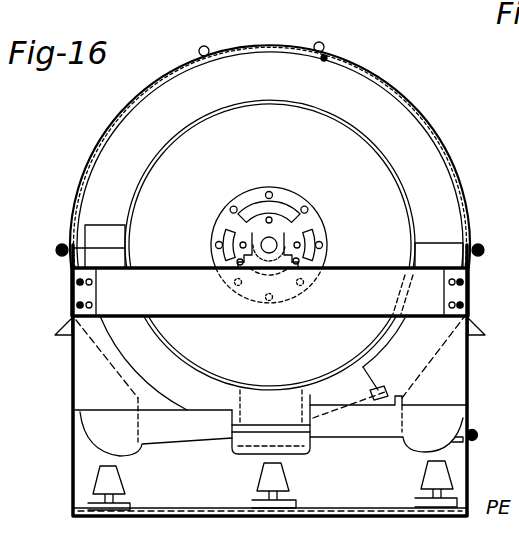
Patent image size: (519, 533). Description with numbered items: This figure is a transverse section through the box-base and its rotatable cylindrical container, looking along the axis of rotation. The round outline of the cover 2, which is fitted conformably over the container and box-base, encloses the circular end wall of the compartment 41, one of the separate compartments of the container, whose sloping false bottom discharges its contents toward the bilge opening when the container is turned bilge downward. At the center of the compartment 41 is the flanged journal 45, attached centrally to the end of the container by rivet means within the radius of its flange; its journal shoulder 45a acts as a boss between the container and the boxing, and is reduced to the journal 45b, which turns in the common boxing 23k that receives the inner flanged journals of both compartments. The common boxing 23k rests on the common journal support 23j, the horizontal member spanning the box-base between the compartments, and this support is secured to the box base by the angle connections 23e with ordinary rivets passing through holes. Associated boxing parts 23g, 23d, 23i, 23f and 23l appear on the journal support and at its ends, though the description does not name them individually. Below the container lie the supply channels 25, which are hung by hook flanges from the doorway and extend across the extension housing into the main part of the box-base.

The cover 2 is at (410, 108).
The compartment 41 is at (382, 152).
The flanged journal 45 is at (288, 193).
The journal shoulder 45a is at (266, 236).
The journal 45b is at (274, 243).
The slot 23g is at (305, 242).
The common boxing 23k is at (218, 249).
The bracket 23d is at (300, 258).
The common journal support 23j is at (270, 292).
The angle connection 23e is at (93, 286).
The bolt 23i is at (93, 304).
The rivets 23f is at (77, 305).
The strap 23l is at (402, 318).
The supply channel 25 is at (271, 423).